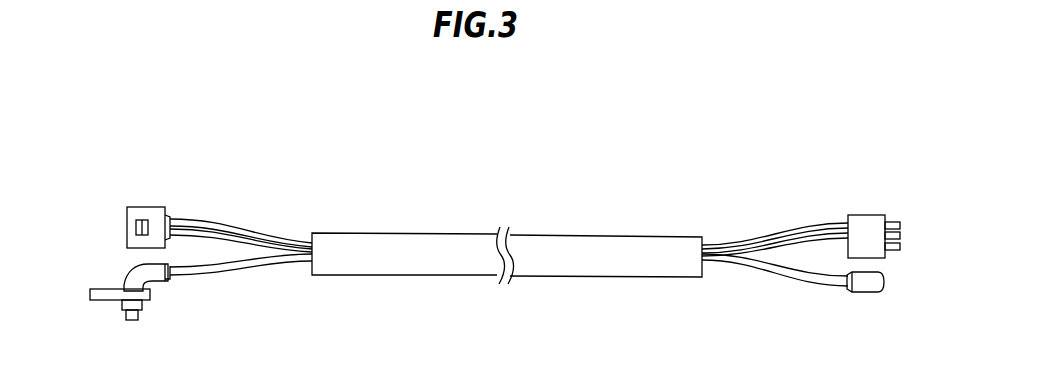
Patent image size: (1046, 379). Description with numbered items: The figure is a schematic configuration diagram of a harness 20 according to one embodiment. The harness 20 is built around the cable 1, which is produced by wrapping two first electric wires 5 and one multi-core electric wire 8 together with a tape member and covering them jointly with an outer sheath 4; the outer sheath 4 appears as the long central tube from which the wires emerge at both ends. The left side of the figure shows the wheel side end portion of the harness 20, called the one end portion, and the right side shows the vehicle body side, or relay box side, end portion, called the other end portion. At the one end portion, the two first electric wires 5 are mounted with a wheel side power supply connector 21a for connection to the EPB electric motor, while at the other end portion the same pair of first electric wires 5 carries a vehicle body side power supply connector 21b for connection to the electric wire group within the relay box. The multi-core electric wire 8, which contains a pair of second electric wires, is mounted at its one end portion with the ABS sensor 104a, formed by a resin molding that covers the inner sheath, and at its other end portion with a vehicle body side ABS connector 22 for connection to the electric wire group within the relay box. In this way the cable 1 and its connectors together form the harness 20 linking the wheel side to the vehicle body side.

The cable 1 is at (532, 233).
The outer sheath 4 is at (628, 277).
The first electric wires 5 is at (203, 220).
The multi-core electric wire 8 is at (258, 268).
The harness 20 is at (653, 185).
The wheel side power supply connector 21a is at (124, 233).
The vehicle body side power supply connector 21b is at (902, 243).
The vehicle body side ABS connector 22 is at (884, 282).
The ABS sensor 104a is at (125, 277).